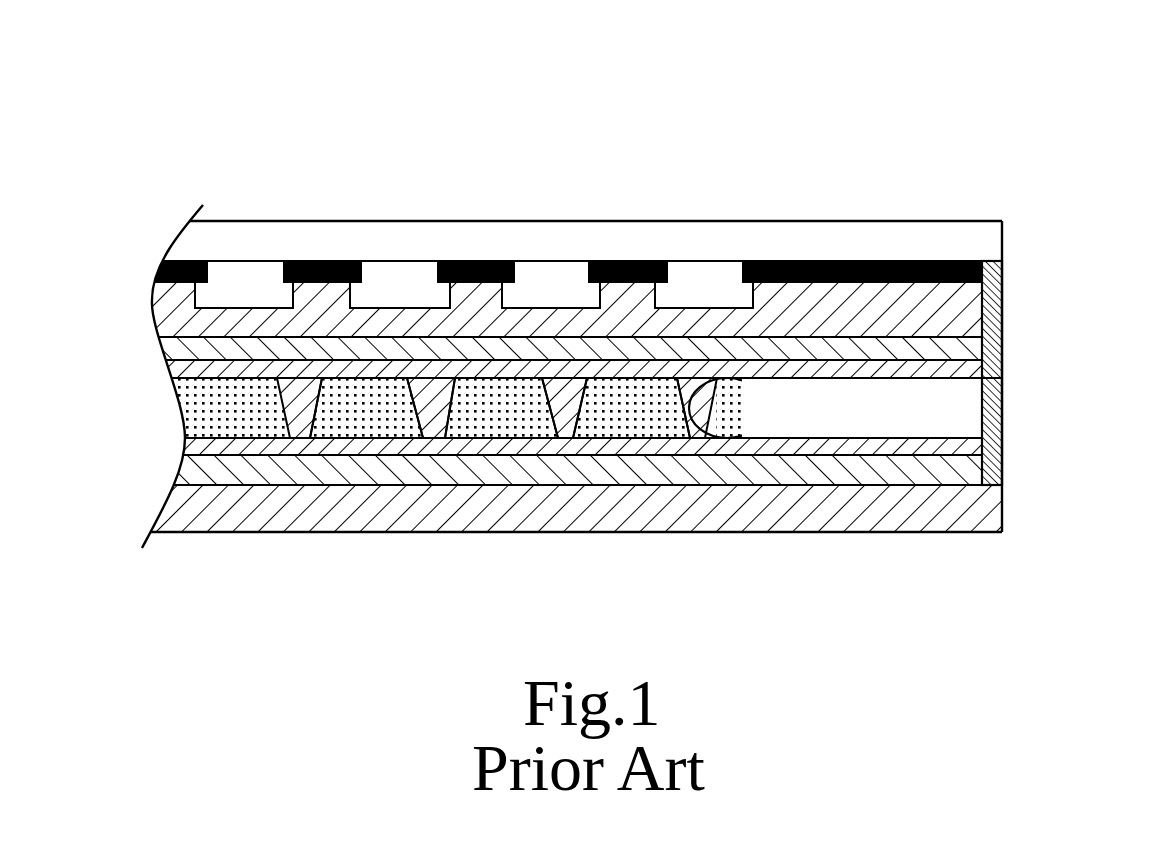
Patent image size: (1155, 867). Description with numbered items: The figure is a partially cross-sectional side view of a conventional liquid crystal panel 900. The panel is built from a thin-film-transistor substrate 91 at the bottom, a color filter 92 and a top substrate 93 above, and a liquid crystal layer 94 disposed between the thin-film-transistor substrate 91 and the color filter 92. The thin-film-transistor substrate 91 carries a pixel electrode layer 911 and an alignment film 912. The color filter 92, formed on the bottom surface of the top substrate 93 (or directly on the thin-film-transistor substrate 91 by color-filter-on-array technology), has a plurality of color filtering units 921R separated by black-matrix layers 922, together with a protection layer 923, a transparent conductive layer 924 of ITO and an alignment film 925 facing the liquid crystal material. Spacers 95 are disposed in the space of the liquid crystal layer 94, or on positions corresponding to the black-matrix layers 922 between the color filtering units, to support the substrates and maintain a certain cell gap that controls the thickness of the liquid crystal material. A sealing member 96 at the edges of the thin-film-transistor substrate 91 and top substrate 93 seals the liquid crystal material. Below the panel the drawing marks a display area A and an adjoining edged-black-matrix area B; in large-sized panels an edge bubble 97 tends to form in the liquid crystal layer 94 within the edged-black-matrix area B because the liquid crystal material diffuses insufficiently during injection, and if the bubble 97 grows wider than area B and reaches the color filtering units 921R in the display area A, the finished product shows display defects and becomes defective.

The liquid crystal panel 900 is at (257, 198).
The color filter 92 is at (643, 208).
The color filtering unit 921R is at (474, 219).
The black-matrix layer 922 is at (822, 260).
The top substrate 93 is at (995, 243).
The protection layer 923 is at (990, 292).
The transparent conductive layer 924 is at (990, 340).
The alignment film 925 is at (990, 372).
The edge bubble 97 is at (962, 408).
The alignment film 912 is at (990, 450).
The sealing member 96 is at (992, 474).
The thin-film-transistor substrate 91 is at (990, 521).
The liquid crystal layer 94 is at (371, 420).
The pixel electrode layer 911 is at (597, 472).
The spacer 95 is at (707, 418).
The display area A is at (742, 282).
The edged-black-matrix area B is at (982, 500).